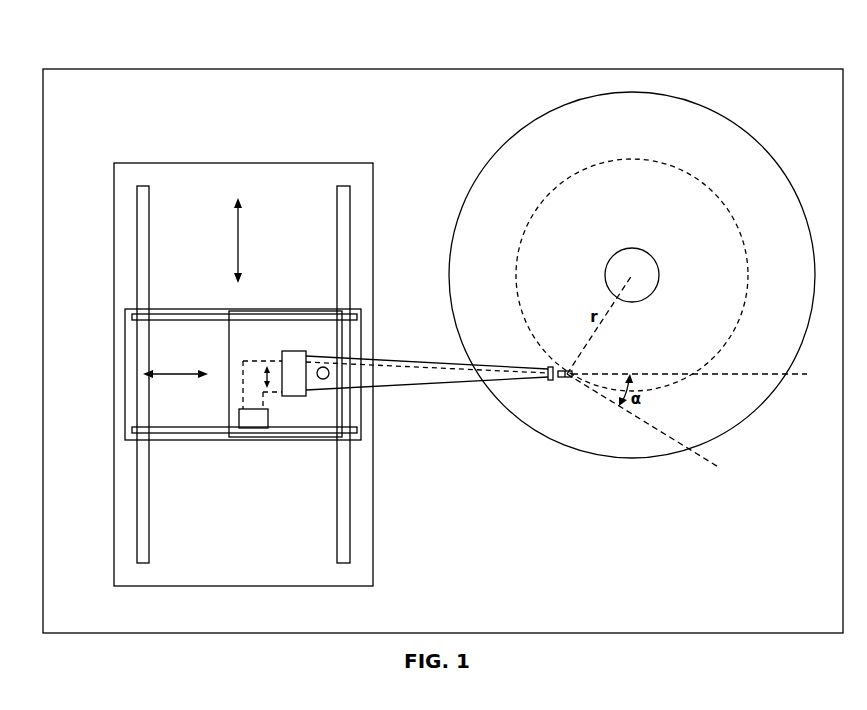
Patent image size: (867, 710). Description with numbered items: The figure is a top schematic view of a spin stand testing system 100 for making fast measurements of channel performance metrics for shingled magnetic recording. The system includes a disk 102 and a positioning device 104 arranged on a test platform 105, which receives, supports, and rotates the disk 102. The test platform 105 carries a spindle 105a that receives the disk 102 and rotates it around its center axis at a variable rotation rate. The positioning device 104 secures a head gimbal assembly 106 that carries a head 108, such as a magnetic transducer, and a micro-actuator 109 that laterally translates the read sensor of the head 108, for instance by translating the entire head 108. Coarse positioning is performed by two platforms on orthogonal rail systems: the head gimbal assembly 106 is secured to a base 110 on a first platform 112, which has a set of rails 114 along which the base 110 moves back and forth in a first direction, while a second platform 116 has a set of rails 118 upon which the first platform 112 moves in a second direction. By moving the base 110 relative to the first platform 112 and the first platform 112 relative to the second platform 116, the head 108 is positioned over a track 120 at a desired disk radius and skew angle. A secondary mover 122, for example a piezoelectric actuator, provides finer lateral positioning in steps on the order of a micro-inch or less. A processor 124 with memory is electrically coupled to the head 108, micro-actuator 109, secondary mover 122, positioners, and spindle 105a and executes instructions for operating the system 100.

The spin stand testing system 100 is at (97, 54).
The disk 102 is at (693, 108).
The positioning device 104 is at (299, 637).
The test platform 105 is at (510, 545).
The spindle 105a is at (637, 247).
The head gimbal assembly 106 is at (437, 381).
The head 108 is at (563, 378).
The micro-actuator 109 is at (550, 381).
The base 110 is at (317, 432).
The first platform 112 is at (133, 354).
The rails 114 is at (132, 318).
The second platform 116 is at (193, 179).
The rails 118 is at (137, 192).
The track 120 is at (682, 168).
The secondary mover 122 is at (296, 393).
The processor 124 is at (248, 428).